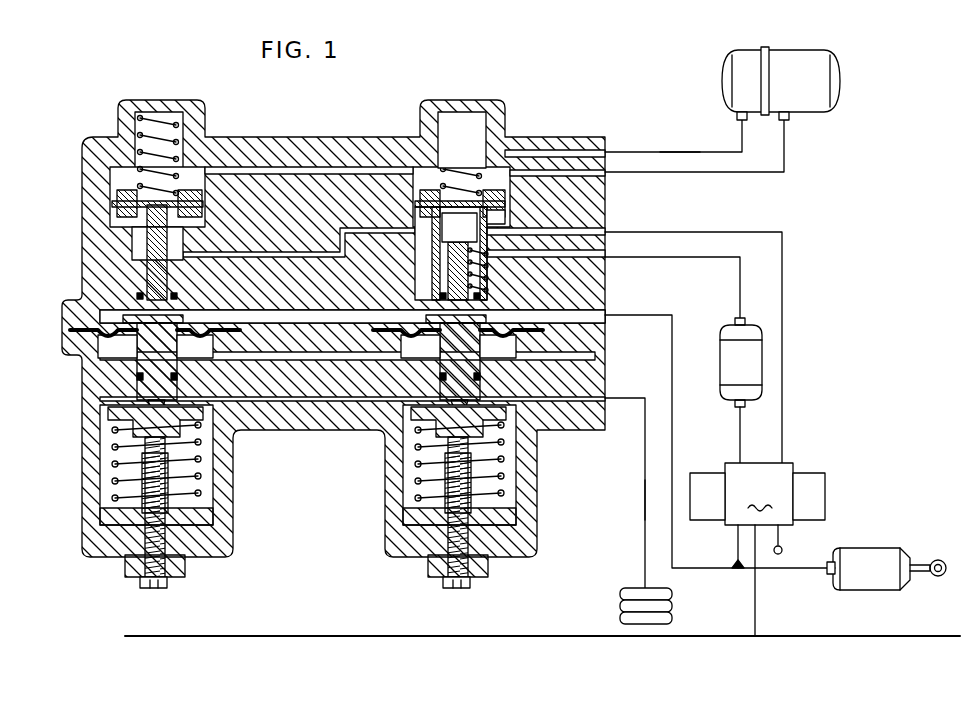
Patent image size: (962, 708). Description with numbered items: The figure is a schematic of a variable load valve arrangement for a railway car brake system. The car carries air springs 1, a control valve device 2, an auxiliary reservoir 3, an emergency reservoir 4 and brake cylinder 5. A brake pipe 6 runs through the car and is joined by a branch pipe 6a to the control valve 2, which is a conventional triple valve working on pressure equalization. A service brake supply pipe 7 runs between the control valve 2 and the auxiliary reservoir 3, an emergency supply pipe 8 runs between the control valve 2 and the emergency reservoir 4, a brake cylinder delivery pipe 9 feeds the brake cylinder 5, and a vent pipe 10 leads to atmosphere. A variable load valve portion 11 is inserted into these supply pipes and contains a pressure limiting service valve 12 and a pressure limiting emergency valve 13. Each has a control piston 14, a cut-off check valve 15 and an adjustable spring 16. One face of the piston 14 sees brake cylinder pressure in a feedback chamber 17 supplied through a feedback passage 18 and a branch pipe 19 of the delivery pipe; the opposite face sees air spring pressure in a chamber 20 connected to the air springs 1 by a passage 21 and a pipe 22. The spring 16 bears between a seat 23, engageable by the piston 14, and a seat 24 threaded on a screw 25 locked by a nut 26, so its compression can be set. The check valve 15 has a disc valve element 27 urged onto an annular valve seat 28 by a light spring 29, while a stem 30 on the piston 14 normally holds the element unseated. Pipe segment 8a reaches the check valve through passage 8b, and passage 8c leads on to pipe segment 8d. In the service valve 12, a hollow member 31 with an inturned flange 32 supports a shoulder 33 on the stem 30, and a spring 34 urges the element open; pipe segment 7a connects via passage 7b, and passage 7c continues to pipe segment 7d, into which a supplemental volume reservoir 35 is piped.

The air springs 1 is at (618, 606).
The control valve device 2 is at (757, 494).
The auxiliary reservoir 3 is at (722, 76).
The emergency reservoir 4 is at (832, 78).
The brake cylinder 5 is at (878, 548).
The brake pipe 6 is at (474, 640).
The branch pipe 6a is at (756, 612).
The service brake supply pipe 7 is at (738, 132).
The segment of auxiliary supply pipe 7a is at (664, 151).
The passage 7b is at (583, 151).
The passage 7c is at (603, 262).
The pipe segment of auxiliary supply pipe 7d is at (672, 258).
The emergency supply pipe 8 is at (787, 133).
The segment of emergency supply pipe 8a is at (665, 173).
The passage 8b is at (250, 171).
The passage 8c is at (253, 255).
The pipe segment of emergency supply pipe 8d is at (665, 231).
The brake cylinder delivery pipe 9 is at (740, 566).
The vent pipe 10 is at (783, 543).
The variable load valve portion 11 is at (110, 128).
The pressure limiting service valve 12 is at (513, 134).
The pressure limiting emergency valve 13 is at (214, 134).
The control piston 14 is at (147, 368).
The cut-off check valve 15 is at (124, 186).
The adjustable spring 16 is at (150, 478).
The feedback chamber 17 is at (100, 316).
The feedback passage 18 is at (250, 312).
The branch pipe 19 is at (633, 317).
The chamber 20 is at (115, 448).
The passage 21 is at (605, 396).
The pipe 22 is at (645, 491).
The seat 23 is at (110, 414).
The seat 24 is at (105, 515).
The screw 25 is at (145, 495).
The nut 26 is at (128, 570).
The disc valve element 27 is at (117, 206).
The annular valve seat 28 is at (132, 240).
The light spring 29 is at (165, 118).
The stem 30 is at (152, 270).
The hollow member 31 is at (505, 222).
The inturned flange 32 is at (487, 263).
The shoulder 33 is at (478, 236).
The spring 34 is at (487, 284).
The supplemental volume reservoir 35 is at (724, 361).